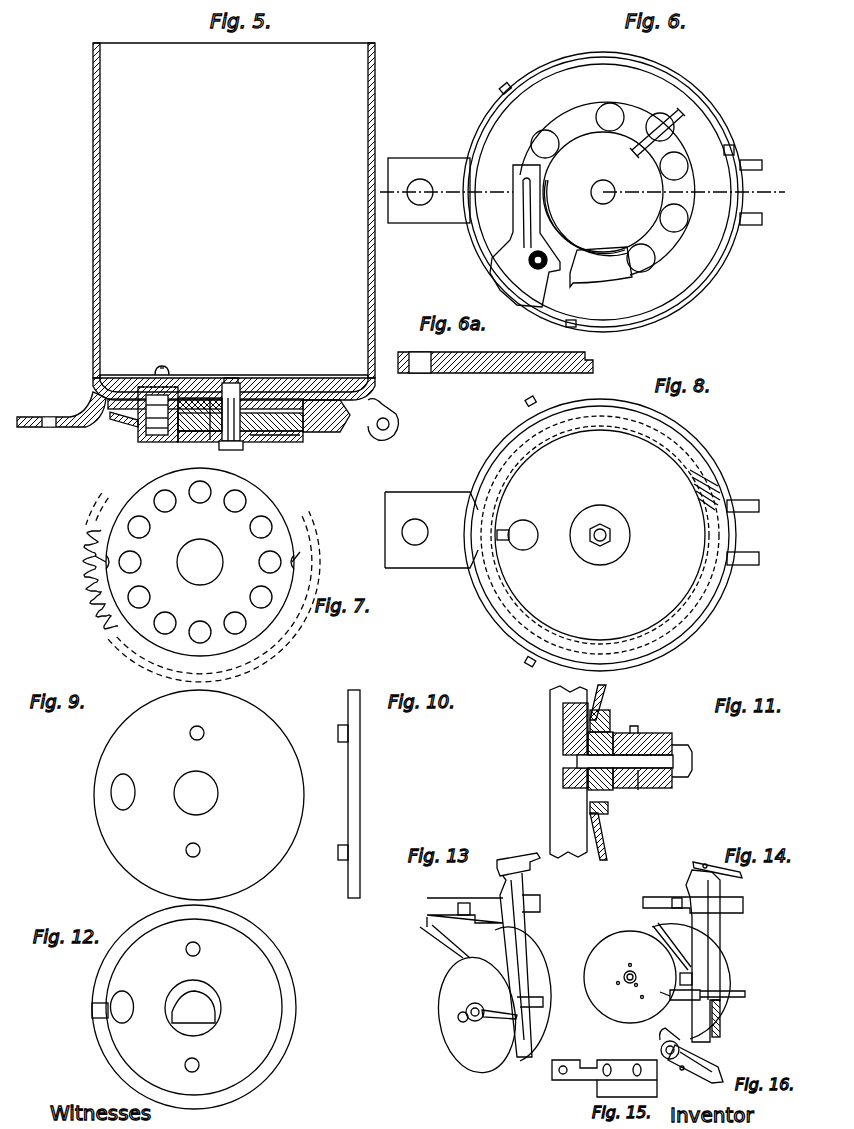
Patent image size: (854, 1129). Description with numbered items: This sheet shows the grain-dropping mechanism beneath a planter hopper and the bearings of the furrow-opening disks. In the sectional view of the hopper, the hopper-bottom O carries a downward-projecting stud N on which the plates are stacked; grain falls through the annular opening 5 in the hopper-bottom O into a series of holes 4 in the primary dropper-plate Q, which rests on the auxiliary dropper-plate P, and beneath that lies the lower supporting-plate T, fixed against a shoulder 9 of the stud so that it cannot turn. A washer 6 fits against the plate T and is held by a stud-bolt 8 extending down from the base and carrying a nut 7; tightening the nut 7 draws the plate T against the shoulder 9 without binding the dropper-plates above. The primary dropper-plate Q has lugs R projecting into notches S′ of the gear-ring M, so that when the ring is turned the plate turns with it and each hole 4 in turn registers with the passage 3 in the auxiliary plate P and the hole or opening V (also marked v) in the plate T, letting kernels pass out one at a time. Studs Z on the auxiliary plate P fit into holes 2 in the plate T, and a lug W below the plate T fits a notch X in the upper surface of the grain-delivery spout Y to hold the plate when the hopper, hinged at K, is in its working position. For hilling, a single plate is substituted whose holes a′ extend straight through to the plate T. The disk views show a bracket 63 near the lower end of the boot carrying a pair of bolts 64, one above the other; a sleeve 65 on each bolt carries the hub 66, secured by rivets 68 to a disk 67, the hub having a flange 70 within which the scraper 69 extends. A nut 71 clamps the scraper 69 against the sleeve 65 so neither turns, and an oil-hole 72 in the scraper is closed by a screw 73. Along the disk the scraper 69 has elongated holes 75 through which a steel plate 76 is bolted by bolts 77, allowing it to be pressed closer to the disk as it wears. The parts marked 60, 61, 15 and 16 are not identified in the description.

In FIG. 5, the annular opening 5 is at (303, 402).
In FIG. 6, the annular opening 5 is at (672, 248).
In FIG. 5, the auxiliary dropper-plate P is at (300, 432).
In FIG. 9, the auxiliary dropper-plate P is at (199, 795).
In FIG. 5, the stud N is at (258, 443).
In FIG. 5, the shoulder 9 is at (287, 440).
In FIG. 5, the lower supporting-plate T is at (150, 443).
In FIG. 12, the lower supporting-plate T is at (285, 965).
In FIG. 5, the holes 4 is at (156, 412).
In FIG. 7, the holes 4 is at (260, 537).
In FIG. 6, the holes 4 is at (645, 122).
In FIG. 5, the passage 3 is at (156, 425).
In FIG. 9, the passage 3 is at (134, 780).
In FIG. 5, the hopper-bottom O is at (247, 400).
In FIG. 6, the hopper-bottom O is at (561, 225).
In FIG. 5, the stud-bolt 8 is at (212, 400).
In FIG. 5, the primary dropper-plate Q is at (190, 410).
In FIG. 7, the primary dropper-plate Q is at (207, 556).
In FIG. 5, the washer 6 is at (206, 442).
In FIG. 6, the washer 6 is at (603, 192).
In FIG. 8, the washer 6 is at (630, 535).
In FIG. 5, the nut 7 is at (236, 450).
In FIG. 5, the lug W is at (128, 432).
In FIG. 8, the lug W is at (512, 527).
In FIG. 12, the lug W is at (92, 1011).
In FIG. 5, the hole or opening V is at (152, 442).
In FIG. 12, the hole or opening V is at (130, 1000).
In FIG. 5, the hinge K is at (390, 424).
In FIG. 6, the hinge K is at (760, 163).
In FIG. 8, the hinge K is at (750, 514).
In FIG. 5, the gear-ring M is at (338, 432).
In FIG. 7, the gear-ring M is at (88, 596).
In FIG. 8, the gear-ring M is at (678, 440).
In FIG. 7, the lugs R is at (110, 556).
In FIG. 7, the notches S′ is at (193, 539).
In FIG. 6A, the grain-receiving holes a′ is at (478, 353).
In FIG. 9, the studs Z is at (173, 730).
In FIG. 12, the key opening v is at (196, 1008).
In FIG. 12, the holes 2 is at (199, 947).
In FIG. 10, the bracket 63 is at (565, 717).
In FIG. 14, the bracket 63 is at (676, 965).
In FIG. 10, the sleeve 65 is at (575, 788).
In FIG. 14, the sleeve 65 is at (696, 1009).
In FIG. 10, the bolts 64 is at (692, 758).
In FIG. 14, the bolts 64 is at (680, 978).
In FIG. 10, the nut 71 is at (692, 774).
In FIG. 10, the flange 70 is at (608, 755).
In FIG. 10, the scraper 69 is at (648, 737).
In FIG. 13, the scraper 69 is at (487, 1010).
In FIG. 16, the scraper 69 is at (700, 1068).
In FIG. 10, the screw 73 is at (645, 732).
In FIG. 10, the oil-hole 72 is at (636, 728).
In FIG. 10, the rivets 68 is at (608, 722).
In FIG. 14, the rivets 68 is at (630, 974).
In FIG. 10, the disks 67 is at (605, 690).
In FIG. 13, the disks 67 is at (491, 1002).
In FIG. 14, the disks 67 is at (630, 976).
In FIG. 10, the lower arm 60 is at (605, 810).
In FIG. 10, the hub 66 is at (644, 791).
In FIG. 14, the hub 66 is at (623, 975).
In FIG. 13, the notch X is at (518, 860).
In FIG. 14, the notch X is at (698, 862).
In FIG. 13, the grain-delivery spout Y is at (512, 930).
In FIG. 14, the grain-delivery spout Y is at (722, 926).
In FIG. 14, the rear disc 61 is at (742, 968).
In FIG. 16, the lever 16 is at (707, 1055).
In FIG. 16, the steel plate 76 is at (682, 1068).
In FIG. 15, the steel plate 76 is at (600, 1080).
In FIG. 16, the bolts 77 is at (700, 1075).
In FIG. 15, the bolts 77 is at (570, 1080).
In FIG. 15, the bracket 15 is at (604, 1070).
In FIG. 15, the elongated holes 75 is at (609, 1064).